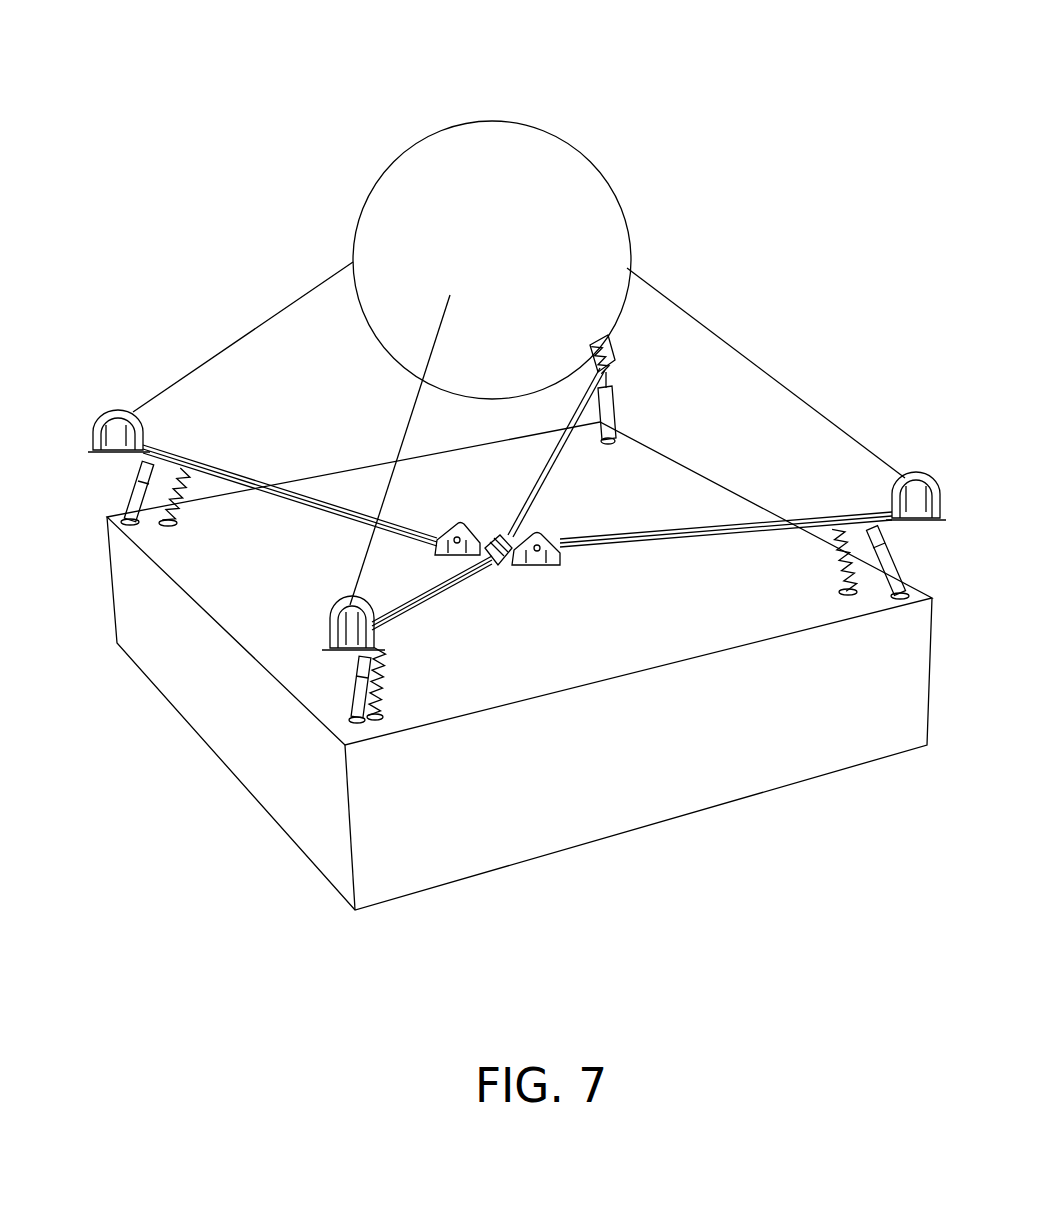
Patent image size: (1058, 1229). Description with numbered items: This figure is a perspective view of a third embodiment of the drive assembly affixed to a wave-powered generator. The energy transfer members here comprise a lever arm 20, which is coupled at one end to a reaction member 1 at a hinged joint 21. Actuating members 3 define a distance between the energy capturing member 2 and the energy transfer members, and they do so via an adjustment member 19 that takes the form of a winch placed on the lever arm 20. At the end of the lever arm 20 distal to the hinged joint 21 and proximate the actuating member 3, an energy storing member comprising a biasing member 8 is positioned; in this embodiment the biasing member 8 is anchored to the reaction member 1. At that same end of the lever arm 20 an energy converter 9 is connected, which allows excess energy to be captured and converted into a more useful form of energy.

The reaction member 1 is at (313, 805).
The energy capturing member 2 is at (466, 171).
The actuating members 3 is at (272, 316).
The biasing member 8 is at (848, 577).
The energy converter 9 is at (893, 600).
The adjustment member 19 is at (335, 632).
The lever arm 20 is at (676, 548).
The hinged joint 21 is at (535, 565).